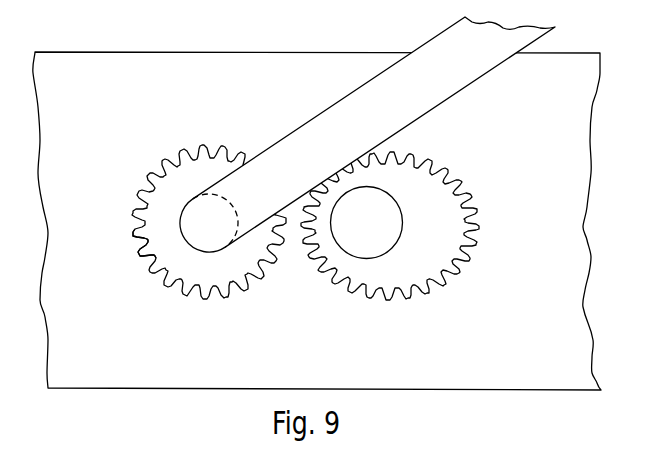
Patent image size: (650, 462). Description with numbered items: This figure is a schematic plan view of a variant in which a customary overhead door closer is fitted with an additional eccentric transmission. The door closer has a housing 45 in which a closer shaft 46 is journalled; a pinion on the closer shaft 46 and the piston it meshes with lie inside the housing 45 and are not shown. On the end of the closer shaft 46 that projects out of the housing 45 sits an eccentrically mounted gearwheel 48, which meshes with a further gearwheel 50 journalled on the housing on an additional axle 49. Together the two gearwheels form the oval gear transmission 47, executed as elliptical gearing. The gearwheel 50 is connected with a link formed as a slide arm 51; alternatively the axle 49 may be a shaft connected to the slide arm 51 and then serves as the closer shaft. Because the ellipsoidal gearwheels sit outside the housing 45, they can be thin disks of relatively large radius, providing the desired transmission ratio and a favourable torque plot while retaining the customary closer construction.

The housing 45 is at (100, 57).
The closer shaft 46 is at (388, 204).
The oval gear transmission 47 is at (172, 140).
The eccentrically mounted gearwheel 48 is at (431, 263).
The additional axle 49 is at (221, 231).
The further gearwheel 50 is at (164, 256).
The slide arm 51 is at (432, 51).